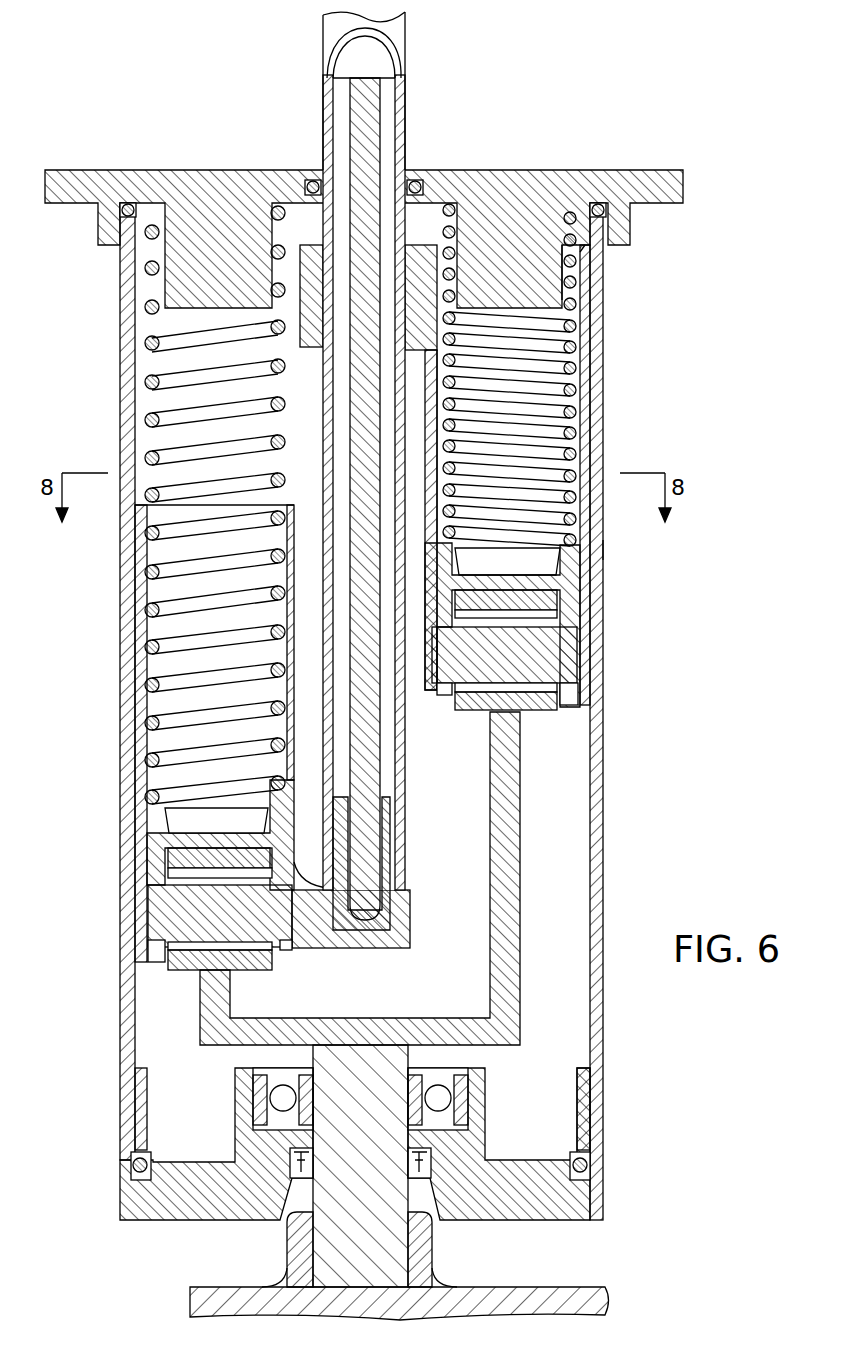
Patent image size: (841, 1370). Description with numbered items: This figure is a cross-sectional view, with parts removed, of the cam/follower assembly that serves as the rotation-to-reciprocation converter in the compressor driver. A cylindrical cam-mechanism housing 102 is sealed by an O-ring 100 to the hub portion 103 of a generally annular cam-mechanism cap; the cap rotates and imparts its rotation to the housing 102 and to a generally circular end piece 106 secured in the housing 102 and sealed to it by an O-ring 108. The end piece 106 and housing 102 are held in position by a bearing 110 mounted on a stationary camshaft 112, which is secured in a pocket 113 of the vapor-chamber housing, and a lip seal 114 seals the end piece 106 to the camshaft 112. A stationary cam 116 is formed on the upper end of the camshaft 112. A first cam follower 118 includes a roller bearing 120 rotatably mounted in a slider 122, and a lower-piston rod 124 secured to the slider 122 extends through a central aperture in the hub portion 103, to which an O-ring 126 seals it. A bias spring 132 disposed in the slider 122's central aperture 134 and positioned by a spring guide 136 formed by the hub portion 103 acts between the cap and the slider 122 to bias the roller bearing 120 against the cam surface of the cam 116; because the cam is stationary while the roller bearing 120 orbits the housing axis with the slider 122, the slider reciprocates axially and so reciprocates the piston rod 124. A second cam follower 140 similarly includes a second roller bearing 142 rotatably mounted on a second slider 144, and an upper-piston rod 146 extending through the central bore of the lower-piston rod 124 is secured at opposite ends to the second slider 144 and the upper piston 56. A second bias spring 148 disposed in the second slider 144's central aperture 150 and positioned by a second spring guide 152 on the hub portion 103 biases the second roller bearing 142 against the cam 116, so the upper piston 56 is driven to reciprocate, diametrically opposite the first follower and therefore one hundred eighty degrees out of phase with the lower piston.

The upper piston 56 is at (688, 546).
The O-ring 100 is at (600, 204).
The cam-mechanism housing 102 is at (603, 753).
The hub portion 103 is at (500, 156).
The end piece 106 is at (593, 1198).
The O-ring 108 is at (588, 1163).
The bearing 110 is at (458, 1053).
The camshaft 112 is at (428, 1212).
The pocket 113 is at (300, 1250).
The lip seal 114 is at (283, 1150).
The cam 116 is at (397, 828).
The first cam follower 118 is at (412, 672).
The roller bearing 120 is at (536, 712).
The slider 122 is at (573, 578).
The lower-piston rod 124 is at (408, 108).
The O-ring 126 is at (414, 174).
The bias spring 132 is at (578, 322).
The central aperture 134 is at (581, 378).
The spring guide 136 is at (588, 268).
The second cam follower 140 is at (296, 950).
The second roller bearing 142 is at (257, 972).
The second slider 144 is at (262, 824).
The upper-piston rod 146 is at (398, 798).
The second bias spring 148 is at (289, 500).
The central aperture 150 is at (205, 515).
The second spring guide 152 is at (213, 308).